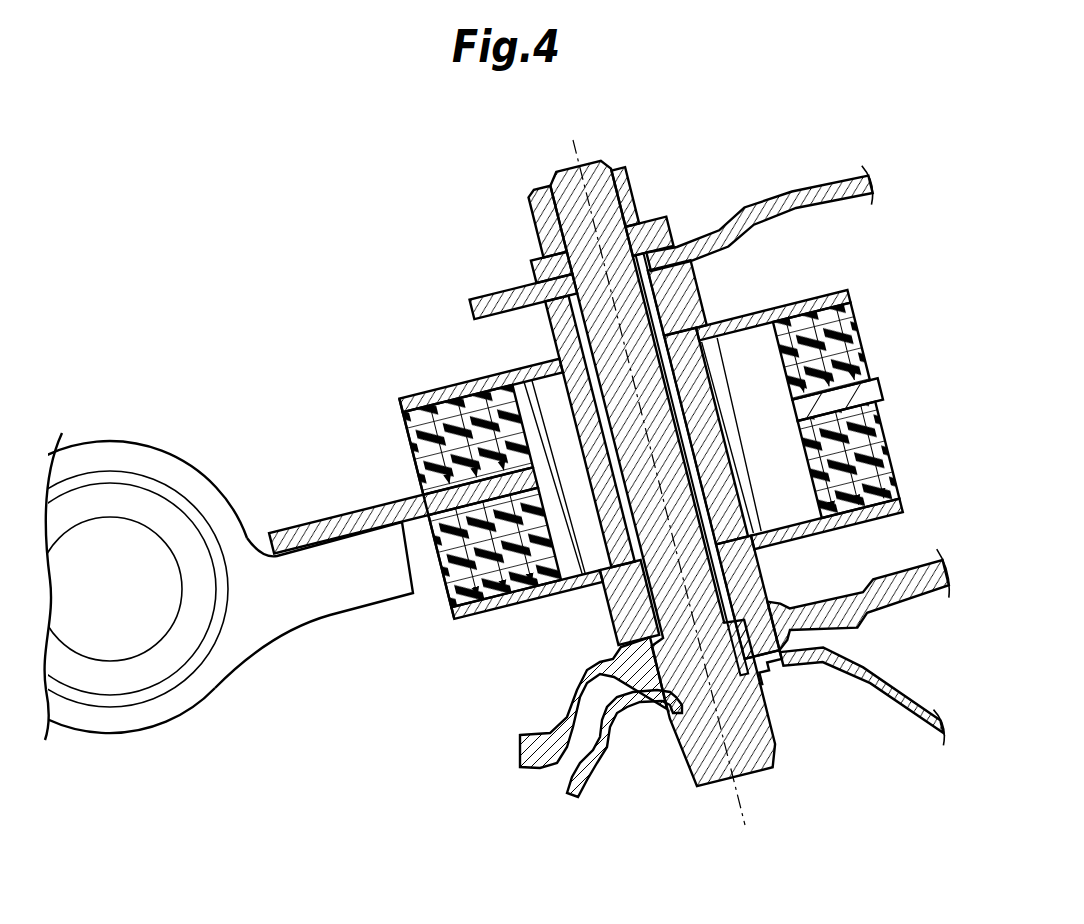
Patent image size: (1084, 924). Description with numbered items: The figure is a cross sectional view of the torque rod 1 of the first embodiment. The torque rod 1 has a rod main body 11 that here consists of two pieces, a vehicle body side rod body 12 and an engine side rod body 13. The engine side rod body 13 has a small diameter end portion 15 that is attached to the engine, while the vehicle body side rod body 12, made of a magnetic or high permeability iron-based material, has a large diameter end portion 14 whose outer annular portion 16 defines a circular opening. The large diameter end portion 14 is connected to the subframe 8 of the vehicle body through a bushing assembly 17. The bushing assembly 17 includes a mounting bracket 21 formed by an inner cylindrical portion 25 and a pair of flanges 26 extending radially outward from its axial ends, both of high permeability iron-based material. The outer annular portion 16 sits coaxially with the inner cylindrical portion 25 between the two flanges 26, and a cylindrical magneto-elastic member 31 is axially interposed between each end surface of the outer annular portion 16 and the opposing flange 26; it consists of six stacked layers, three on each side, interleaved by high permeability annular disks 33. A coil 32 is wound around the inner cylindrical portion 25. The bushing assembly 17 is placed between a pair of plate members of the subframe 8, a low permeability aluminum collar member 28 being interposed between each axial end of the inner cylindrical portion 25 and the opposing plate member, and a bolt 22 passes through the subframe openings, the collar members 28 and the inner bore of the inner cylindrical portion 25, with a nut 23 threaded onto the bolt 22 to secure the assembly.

The torque rod 1 is at (503, 465).
The subframe 8 is at (795, 188).
The rod main body 11 is at (376, 562).
The vehicle body side rod body 12 is at (387, 505).
The engine side rod body 13 is at (322, 620).
The large diameter end portion 14 is at (422, 515).
The small diameter end portion 15 is at (162, 430).
The outer annular portion 16 is at (885, 398).
The bushing assembly 17 is at (493, 490).
The mounting bracket 21 is at (485, 622).
The bolt 22 is at (578, 182).
The nut 23 is at (545, 222).
The inner cylindrical portion 25 is at (776, 525).
The flanges 26 is at (818, 298).
The collar member 28 is at (700, 293).
The magneto-elastic member 31 is at (812, 448).
The coil 32 is at (540, 395).
The annular disks 33 is at (895, 470).